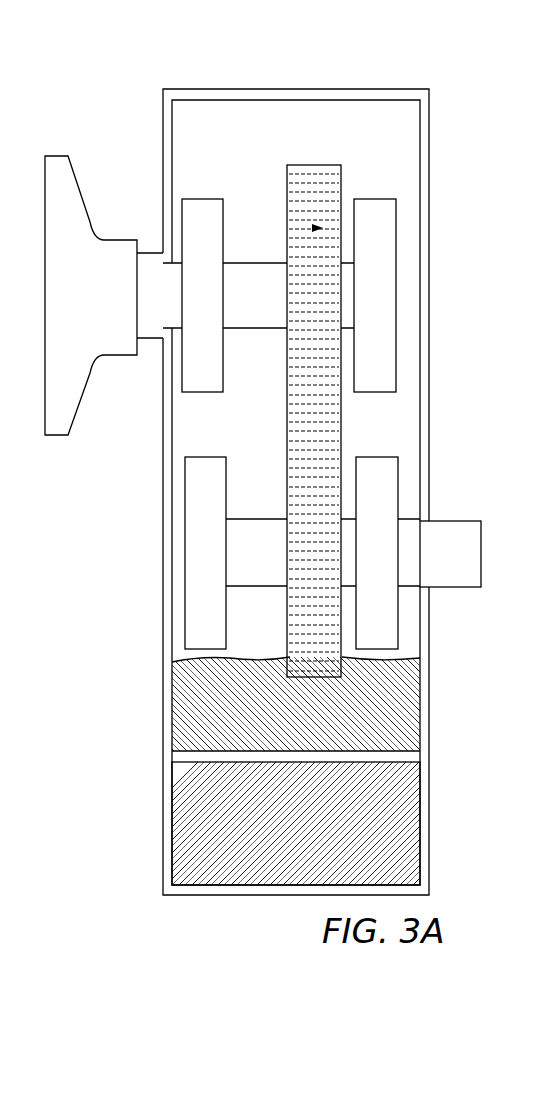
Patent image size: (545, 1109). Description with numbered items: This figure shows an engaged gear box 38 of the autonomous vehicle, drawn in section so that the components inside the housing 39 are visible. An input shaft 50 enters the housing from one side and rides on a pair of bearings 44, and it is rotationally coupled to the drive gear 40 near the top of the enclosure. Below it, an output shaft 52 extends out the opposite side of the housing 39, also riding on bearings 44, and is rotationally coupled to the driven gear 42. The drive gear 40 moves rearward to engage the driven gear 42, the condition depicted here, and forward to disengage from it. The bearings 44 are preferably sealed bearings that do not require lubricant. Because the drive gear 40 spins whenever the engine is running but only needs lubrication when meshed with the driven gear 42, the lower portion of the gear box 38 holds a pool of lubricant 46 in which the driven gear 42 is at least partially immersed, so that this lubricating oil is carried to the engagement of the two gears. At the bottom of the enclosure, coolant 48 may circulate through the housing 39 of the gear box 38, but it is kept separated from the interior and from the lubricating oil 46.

The gear box 38 is at (125, 131).
The housing 39 is at (422, 775).
The drive gear 40 is at (310, 177).
The driven gear 42 is at (296, 468).
The bearings 44 is at (215, 256).
The lubricant 46 is at (248, 712).
The coolant 48 is at (341, 814).
The input shaft 50 is at (271, 306).
The output shaft 52 is at (276, 564).